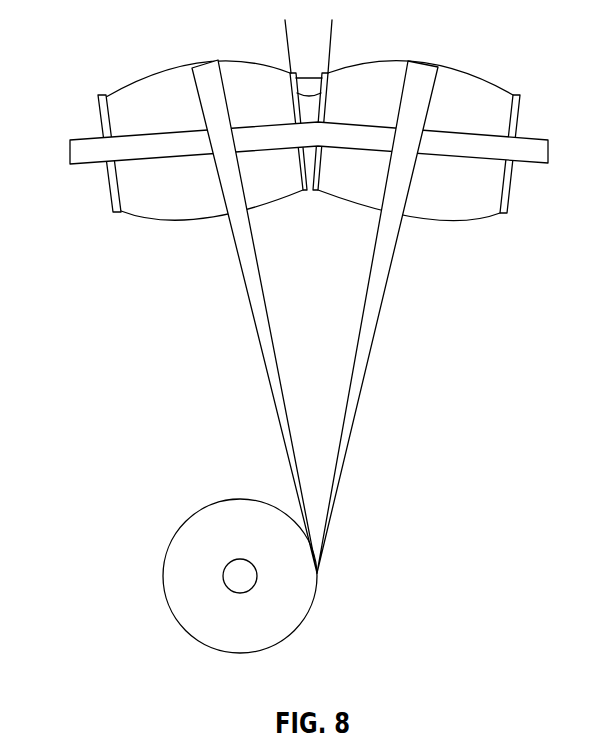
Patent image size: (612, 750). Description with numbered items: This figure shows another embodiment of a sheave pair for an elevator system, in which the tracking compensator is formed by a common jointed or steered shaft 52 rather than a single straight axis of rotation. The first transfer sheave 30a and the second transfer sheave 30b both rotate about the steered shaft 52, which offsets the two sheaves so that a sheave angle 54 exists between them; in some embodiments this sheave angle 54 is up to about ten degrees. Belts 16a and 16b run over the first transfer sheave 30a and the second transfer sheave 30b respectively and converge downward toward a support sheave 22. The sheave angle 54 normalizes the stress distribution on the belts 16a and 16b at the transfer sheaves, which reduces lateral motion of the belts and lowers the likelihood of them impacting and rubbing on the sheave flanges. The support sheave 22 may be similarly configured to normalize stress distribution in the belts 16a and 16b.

The belt 16a is at (382, 303).
The belt 16b is at (250, 303).
The support sheave 22 is at (235, 507).
The first transfer sheave 30a is at (478, 197).
The second transfer sheave 30b is at (148, 198).
The steered shaft 52 is at (85, 148).
The sheave angle 54 is at (307, 82).